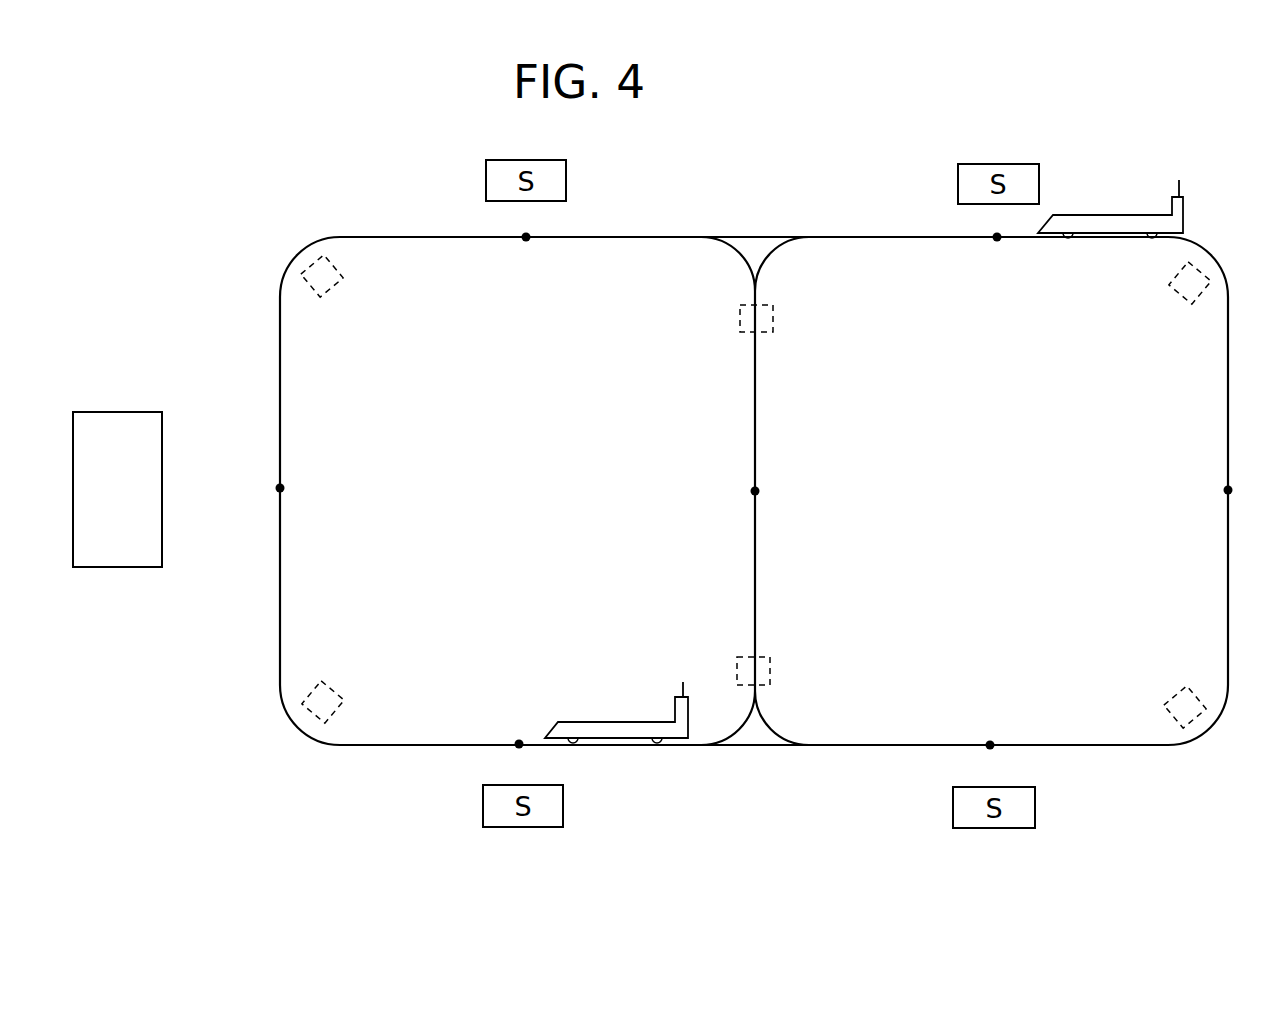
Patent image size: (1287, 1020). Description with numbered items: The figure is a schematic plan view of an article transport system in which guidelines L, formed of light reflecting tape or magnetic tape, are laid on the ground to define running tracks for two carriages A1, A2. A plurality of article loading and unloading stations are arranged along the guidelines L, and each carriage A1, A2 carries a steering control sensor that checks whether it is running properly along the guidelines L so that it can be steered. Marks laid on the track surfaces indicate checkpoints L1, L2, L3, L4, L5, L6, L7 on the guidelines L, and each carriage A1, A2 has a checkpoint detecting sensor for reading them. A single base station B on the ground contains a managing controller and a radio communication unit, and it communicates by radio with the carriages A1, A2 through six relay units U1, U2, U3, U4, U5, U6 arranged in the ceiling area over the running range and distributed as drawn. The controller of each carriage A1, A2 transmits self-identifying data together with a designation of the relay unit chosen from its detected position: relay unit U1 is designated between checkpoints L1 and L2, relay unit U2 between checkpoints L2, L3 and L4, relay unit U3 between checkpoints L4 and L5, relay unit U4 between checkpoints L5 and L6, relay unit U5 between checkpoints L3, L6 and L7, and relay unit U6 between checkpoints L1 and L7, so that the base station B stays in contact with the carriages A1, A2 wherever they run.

The guidelines L is at (1229, 568).
The checkpoint L1 is at (285, 487).
The checkpoint L2 is at (526, 242).
The checkpoint L3 is at (760, 490).
The checkpoint L4 is at (997, 242).
The checkpoint L5 is at (1222, 492).
The checkpoint L6 is at (990, 740).
The checkpoint L7 is at (519, 739).
The relay unit U1 is at (340, 290).
The relay unit U2 is at (737, 310).
The relay unit U3 is at (1180, 300).
The relay unit U4 is at (1176, 688).
The relay unit U5 is at (777, 670).
The relay unit U6 is at (340, 680).
The carriage A1 is at (1097, 212).
The carriage A2 is at (640, 718).
The base station B is at (121, 410).